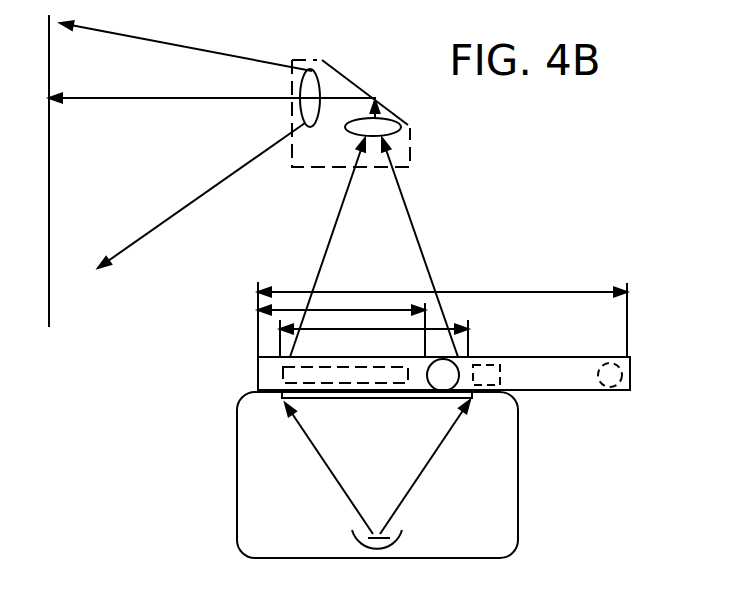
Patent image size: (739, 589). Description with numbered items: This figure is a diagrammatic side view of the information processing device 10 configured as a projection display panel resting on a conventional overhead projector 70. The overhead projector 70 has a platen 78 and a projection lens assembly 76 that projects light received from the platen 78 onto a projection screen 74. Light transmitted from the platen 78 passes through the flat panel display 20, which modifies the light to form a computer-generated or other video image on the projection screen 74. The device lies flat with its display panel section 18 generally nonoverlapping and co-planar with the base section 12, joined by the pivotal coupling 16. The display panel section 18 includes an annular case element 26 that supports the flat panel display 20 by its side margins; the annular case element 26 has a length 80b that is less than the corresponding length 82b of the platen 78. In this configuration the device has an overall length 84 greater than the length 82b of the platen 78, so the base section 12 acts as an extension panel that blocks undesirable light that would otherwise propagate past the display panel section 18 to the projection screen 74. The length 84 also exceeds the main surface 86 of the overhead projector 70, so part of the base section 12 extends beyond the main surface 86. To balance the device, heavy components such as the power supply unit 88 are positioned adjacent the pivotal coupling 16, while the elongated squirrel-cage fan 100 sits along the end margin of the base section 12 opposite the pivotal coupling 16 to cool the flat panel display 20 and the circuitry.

The information processing device 10 is at (553, 355).
The base section 12 is at (578, 388).
The pivotal coupling 16 is at (427, 383).
The display panel section 18 is at (258, 373).
The flat panel display 20 is at (363, 368).
The annular case element 26 is at (270, 390).
The overhead projector 70 is at (518, 472).
The projection screen 74 is at (49, 283).
The projection lens assembly 76 is at (398, 133).
The platen 78 is at (337, 400).
The length of annular case element 80b is at (367, 305).
The length of platen 82b is at (370, 338).
The length of information processing device 84 is at (412, 291).
The main surface 86 is at (482, 392).
The power supply unit 88 is at (485, 352).
The fan 100 is at (620, 397).